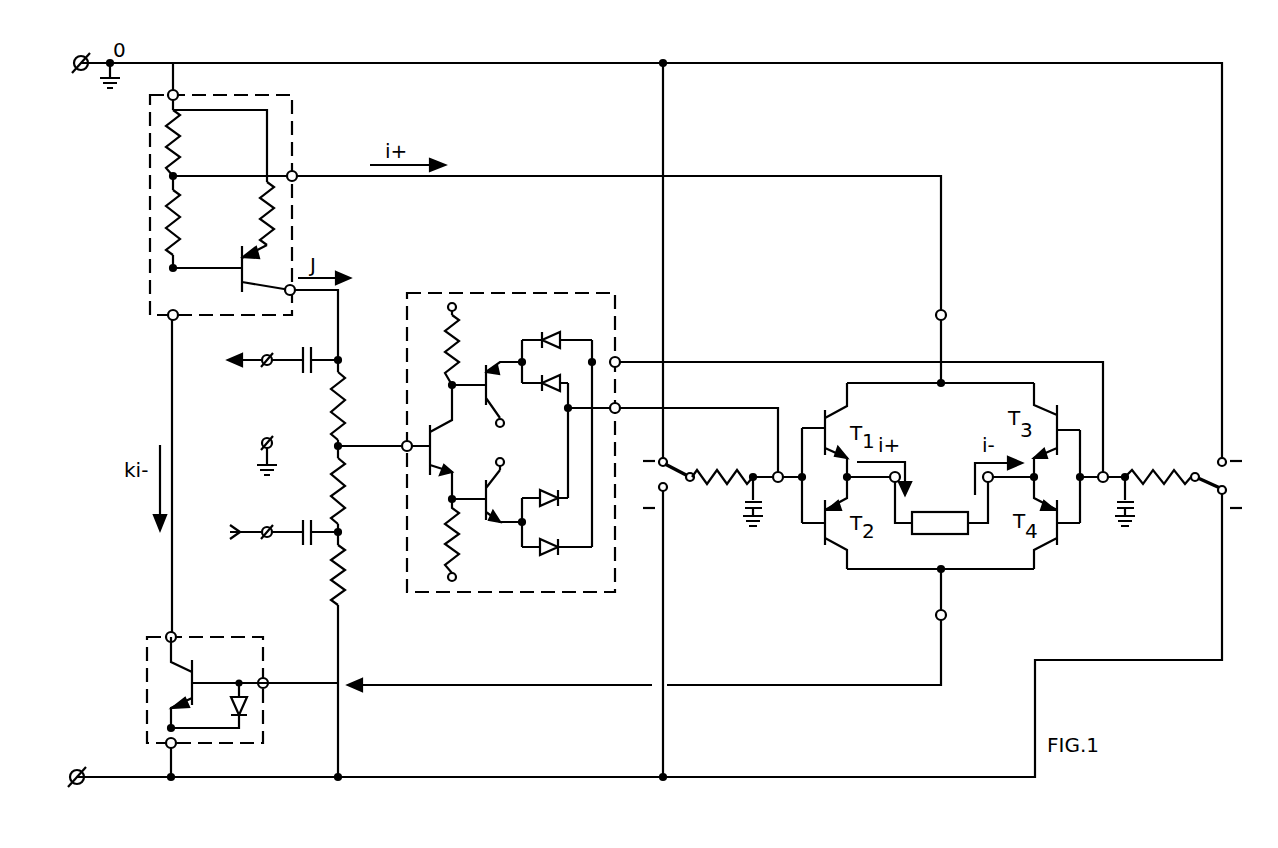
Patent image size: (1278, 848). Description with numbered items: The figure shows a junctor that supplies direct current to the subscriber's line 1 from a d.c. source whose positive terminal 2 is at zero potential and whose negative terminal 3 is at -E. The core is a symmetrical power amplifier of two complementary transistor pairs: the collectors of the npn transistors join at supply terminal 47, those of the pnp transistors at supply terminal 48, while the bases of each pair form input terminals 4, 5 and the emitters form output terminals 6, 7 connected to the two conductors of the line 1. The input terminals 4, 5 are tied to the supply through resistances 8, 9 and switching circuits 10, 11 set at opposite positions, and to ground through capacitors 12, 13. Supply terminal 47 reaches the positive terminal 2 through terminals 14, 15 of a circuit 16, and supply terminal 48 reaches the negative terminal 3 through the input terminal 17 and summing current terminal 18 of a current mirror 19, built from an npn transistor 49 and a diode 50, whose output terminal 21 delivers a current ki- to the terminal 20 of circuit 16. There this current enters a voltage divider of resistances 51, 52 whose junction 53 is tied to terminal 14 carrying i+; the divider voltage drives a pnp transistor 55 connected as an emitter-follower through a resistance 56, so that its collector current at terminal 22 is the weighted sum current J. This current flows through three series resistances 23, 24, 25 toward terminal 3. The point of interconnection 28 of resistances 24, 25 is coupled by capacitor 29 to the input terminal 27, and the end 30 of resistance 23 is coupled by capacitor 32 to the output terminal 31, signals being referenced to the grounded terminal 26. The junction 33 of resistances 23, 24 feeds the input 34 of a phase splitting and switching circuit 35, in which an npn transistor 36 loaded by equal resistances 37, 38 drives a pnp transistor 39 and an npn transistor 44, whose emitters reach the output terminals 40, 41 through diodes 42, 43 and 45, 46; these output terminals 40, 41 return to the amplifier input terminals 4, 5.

The subscriber's line 1 is at (958, 512).
The positive terminal 2 is at (81, 83).
The negative terminal 3 is at (80, 770).
The input terminal 4 is at (778, 483).
The input terminal 5 is at (1103, 483).
The output terminal 6 is at (891, 481).
The output terminal 7 is at (990, 482).
The resistance 8 is at (728, 465).
The resistance 9 is at (1153, 470).
The switching circuit 10 is at (682, 462).
The switching circuit 11 is at (1215, 490).
The capacitor 12 is at (745, 516).
The capacitor 13 is at (1134, 510).
The terminal 14 is at (292, 176).
The terminal 15 is at (177, 92).
The circuit 16 is at (292, 138).
The input terminal 17 is at (265, 680).
The summing current terminal 18 is at (178, 748).
The current mirror 19 is at (350, 605).
The terminal 20 is at (168, 318).
The output terminal 21 is at (176, 632).
The terminal 22 is at (294, 296).
The resistance 23 is at (343, 408).
The resistance 24 is at (345, 500).
The resistance 25 is at (340, 577).
The terminal 26 is at (263, 443).
The input terminal 27 is at (262, 540).
The point of interconnection 28 is at (343, 532).
The capacitor 29 is at (303, 530).
The end 30 is at (343, 358).
The output terminal 31 is at (267, 355).
The capacitor 32 is at (310, 370).
The junction 33 is at (334, 447).
The input 34 is at (405, 444).
The phase splitting and switching circuit 35 is at (488, 293).
The npn transistor 36 is at (448, 448).
The resistance 37 is at (448, 338).
The resistance 38 is at (448, 557).
The pnp transistor 39 is at (480, 370).
The output terminal 40 is at (619, 405).
The output terminal 41 is at (619, 360).
The diode 42 is at (548, 374).
The diode 43 is at (548, 332).
The npn transistor 44 is at (478, 512).
The diode 45 is at (548, 490).
The diode 46 is at (548, 540).
The supply terminal 47 is at (946, 311).
The supply terminal 48 is at (950, 620).
The npn transistor 49 is at (195, 675).
The diode 50 is at (250, 705).
The resistance 51 is at (168, 216).
The resistance 52 is at (170, 140).
The junction 53 is at (176, 176).
The pnp transistor 55 is at (240, 282).
The resistance 56 is at (270, 212).